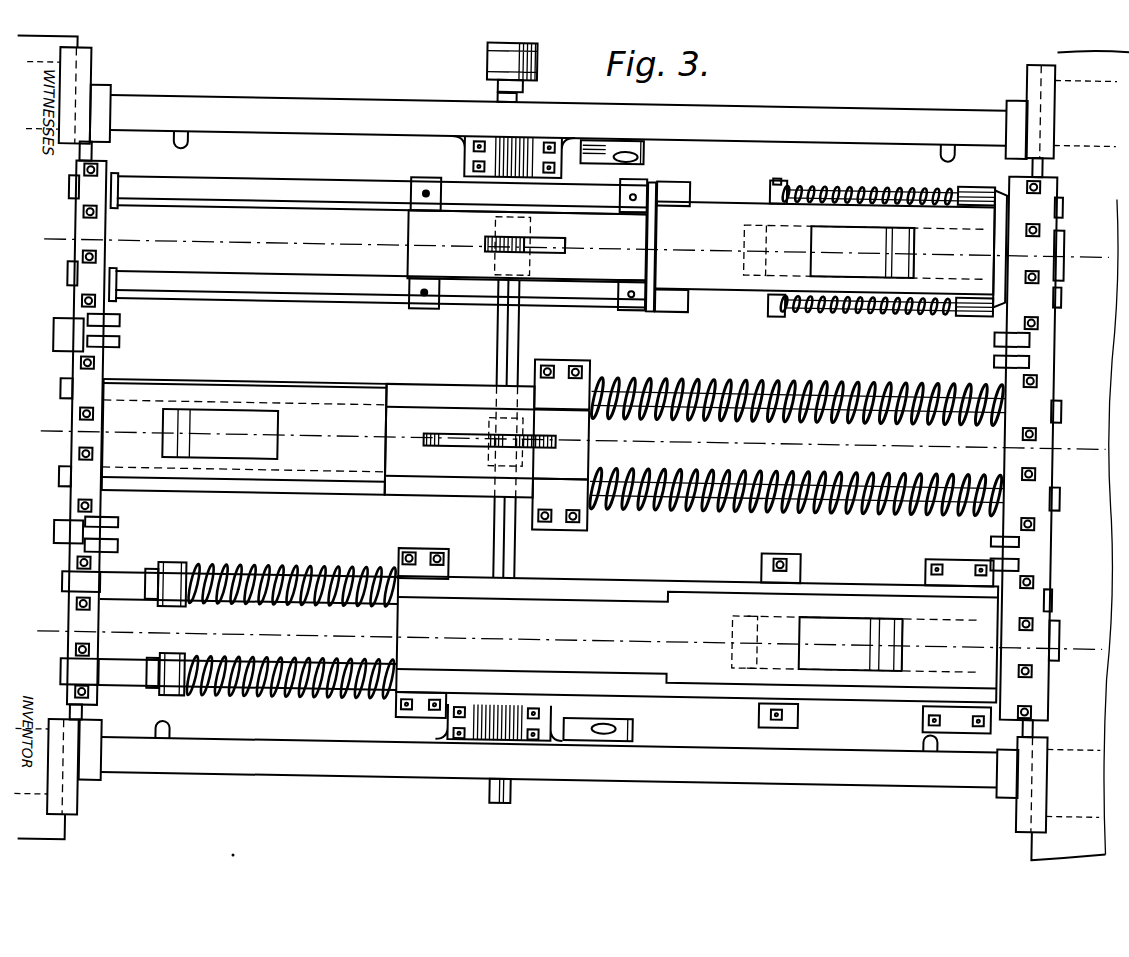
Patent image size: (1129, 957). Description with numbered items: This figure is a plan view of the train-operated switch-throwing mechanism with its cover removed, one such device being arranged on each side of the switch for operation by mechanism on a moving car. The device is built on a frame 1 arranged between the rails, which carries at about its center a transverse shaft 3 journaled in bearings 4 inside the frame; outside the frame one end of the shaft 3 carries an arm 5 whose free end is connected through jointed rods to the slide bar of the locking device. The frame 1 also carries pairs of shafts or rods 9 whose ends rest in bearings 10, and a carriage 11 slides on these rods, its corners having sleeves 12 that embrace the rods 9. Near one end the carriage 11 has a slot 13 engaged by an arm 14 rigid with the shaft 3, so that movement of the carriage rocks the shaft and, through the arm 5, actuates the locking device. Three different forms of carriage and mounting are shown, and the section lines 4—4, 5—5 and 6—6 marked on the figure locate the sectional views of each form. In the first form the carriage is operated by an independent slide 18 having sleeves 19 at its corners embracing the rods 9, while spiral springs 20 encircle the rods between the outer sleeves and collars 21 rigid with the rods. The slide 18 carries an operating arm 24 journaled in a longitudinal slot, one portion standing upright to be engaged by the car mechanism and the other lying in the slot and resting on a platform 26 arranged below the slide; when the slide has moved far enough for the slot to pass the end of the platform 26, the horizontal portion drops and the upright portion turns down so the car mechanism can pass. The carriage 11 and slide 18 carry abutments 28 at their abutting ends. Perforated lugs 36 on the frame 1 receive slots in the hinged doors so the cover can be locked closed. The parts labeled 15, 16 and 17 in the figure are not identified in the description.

The frame 1 is at (796, 116).
The transverse shaft 3 is at (518, 330).
The bearings 4 is at (508, 143).
The arm 5 is at (480, 60).
The section line 6- 6 is at (45, 629).
The shafts or rods 9 is at (136, 208).
The bearings 10 is at (68, 200).
The carriage 11 is at (526, 246).
The sleeves 12 is at (422, 182).
The slot 13 is at (178, 574).
The arm 14 is at (552, 247).
The spring 15 is at (222, 576).
The collar 16 is at (156, 580).
The frame bar 17 is at (98, 168).
The independent slide 18 is at (573, 439).
The sleeves 19 is at (664, 180).
The spiral springs 20 is at (850, 176).
The collars 21 is at (774, 178).
The operating arm 24 is at (910, 247).
The platform 26 is at (1062, 230).
The abutments 28 is at (652, 250).
The perforated lugs 36 is at (617, 151).